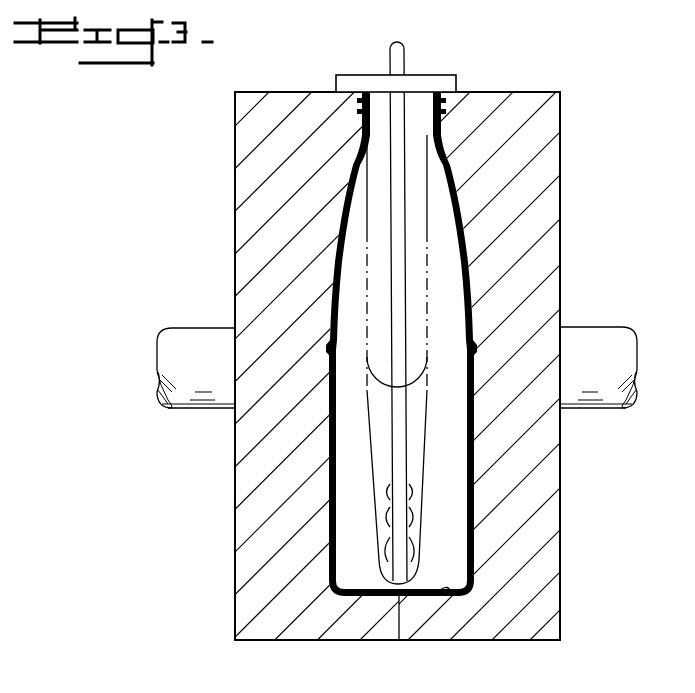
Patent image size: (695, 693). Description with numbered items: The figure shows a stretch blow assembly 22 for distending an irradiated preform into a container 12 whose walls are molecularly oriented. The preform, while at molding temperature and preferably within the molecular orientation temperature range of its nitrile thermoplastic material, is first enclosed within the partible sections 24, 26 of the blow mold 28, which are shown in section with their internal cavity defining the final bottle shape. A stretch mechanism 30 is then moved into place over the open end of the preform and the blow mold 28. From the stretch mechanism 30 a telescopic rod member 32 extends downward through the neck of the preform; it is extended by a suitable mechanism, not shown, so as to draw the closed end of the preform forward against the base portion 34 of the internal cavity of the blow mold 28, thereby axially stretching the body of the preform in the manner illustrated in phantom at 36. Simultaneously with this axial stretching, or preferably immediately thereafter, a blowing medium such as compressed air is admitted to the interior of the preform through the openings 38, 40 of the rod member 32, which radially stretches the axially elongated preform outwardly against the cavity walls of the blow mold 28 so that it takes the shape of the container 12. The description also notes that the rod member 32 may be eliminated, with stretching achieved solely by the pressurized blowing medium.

The container 12 is at (474, 422).
The stretch blow assembly 22 is at (583, 311).
The partible section 24 is at (523, 108).
The partible section 26 is at (252, 137).
The blow mold 28 is at (350, 652).
The stretch mechanism 30 is at (421, 64).
The telescopic rod member 32 is at (405, 278).
The base portion 34 is at (440, 590).
The axially stretched preform (phantom) 36 is at (420, 475).
The opening 38 is at (412, 510).
The opening 40 is at (417, 540).